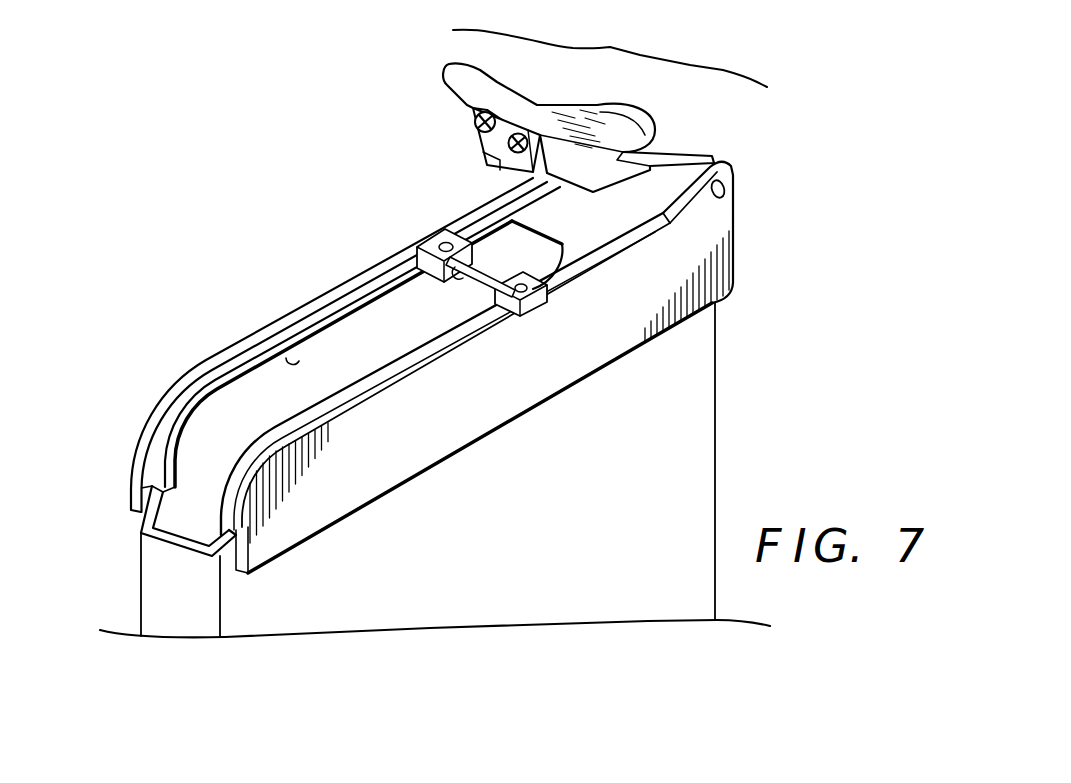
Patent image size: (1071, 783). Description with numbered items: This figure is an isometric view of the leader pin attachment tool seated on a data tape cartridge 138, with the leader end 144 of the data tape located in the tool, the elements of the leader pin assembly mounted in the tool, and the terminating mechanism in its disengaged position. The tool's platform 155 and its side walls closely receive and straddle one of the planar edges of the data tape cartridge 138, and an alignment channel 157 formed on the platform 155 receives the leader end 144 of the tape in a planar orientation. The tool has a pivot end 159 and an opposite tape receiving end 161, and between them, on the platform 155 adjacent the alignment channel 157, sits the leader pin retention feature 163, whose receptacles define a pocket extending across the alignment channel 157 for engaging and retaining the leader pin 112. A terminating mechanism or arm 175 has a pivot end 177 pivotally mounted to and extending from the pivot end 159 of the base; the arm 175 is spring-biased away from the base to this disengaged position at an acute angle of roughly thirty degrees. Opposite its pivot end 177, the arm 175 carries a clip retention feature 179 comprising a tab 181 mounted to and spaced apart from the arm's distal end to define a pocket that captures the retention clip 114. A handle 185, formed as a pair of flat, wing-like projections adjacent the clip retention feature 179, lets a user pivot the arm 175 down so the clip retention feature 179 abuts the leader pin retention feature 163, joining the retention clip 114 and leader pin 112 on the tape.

The leader pin 112 is at (483, 276).
The retention clip 114 is at (476, 142).
The data tape cartridge 138 is at (718, 430).
The leader end 144 is at (367, 337).
The platform 155 is at (568, 206).
The alignment channel 157 is at (300, 362).
The pivot end 159 is at (718, 163).
The tape receiving end 161 is at (163, 468).
The leader pin retention feature 163 is at (388, 218).
The terminating mechanism or arm 175 is at (610, 51).
The pivot end 177 is at (632, 111).
The clip retention feature 179 is at (458, 122).
The tab 181 is at (487, 160).
The handle 185 is at (443, 80).